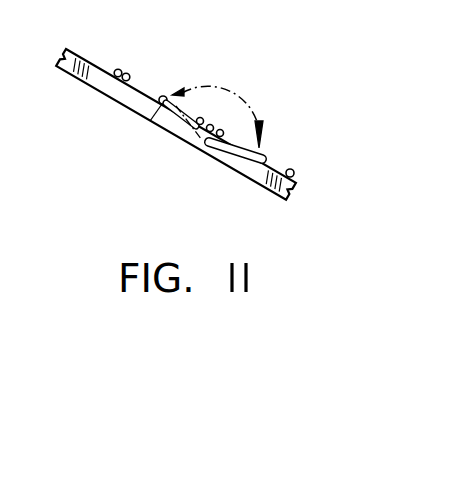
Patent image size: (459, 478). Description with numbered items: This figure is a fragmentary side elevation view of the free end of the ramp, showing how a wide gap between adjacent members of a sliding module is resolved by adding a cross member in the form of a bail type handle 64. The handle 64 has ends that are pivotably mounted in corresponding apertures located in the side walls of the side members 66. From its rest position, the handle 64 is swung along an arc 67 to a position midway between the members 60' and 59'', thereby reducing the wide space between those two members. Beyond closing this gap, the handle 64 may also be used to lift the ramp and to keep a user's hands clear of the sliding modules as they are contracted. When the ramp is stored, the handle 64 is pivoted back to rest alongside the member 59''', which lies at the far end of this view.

The member 59''' is at (173, 65).
The member 60' is at (205, 95).
The side members 66 is at (230, 161).
The arc 67 is at (240, 94).
The bail type handle 64 is at (262, 126).
The member 59'' is at (325, 159).